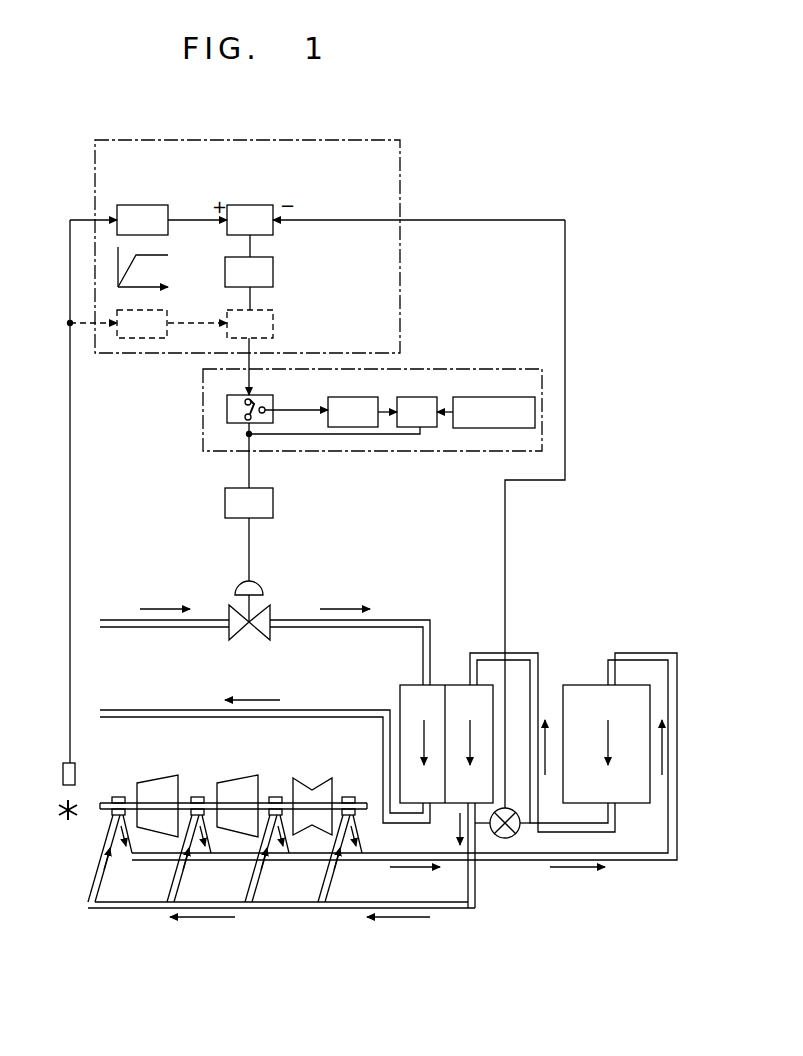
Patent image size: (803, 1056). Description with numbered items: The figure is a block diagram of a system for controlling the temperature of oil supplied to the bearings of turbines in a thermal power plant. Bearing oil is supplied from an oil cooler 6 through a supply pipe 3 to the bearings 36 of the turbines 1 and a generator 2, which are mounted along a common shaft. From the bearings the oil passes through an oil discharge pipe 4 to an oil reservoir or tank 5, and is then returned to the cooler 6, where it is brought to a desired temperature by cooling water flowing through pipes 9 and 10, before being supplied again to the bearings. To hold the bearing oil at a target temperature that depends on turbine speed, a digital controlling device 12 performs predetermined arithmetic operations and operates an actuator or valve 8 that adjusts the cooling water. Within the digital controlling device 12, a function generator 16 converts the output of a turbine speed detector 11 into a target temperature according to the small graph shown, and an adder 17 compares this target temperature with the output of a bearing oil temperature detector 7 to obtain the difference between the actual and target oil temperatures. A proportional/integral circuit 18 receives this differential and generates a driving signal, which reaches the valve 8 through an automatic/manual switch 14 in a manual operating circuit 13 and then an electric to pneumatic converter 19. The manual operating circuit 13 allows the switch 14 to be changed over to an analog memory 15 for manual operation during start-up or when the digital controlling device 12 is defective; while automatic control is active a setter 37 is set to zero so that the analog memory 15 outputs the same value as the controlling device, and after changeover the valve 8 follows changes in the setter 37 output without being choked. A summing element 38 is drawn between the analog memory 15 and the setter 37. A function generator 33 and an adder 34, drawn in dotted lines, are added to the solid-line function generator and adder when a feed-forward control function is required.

The turbines 1 is at (165, 775).
The generator 2 is at (320, 778).
The supply pipe 3 is at (455, 911).
The oil discharge pipe 4 is at (649, 862).
The oil reservoir or tank 5 is at (586, 684).
The oil cooler 6 is at (405, 684).
The bearing oil temperature detector 7 is at (515, 835).
The actuator or valve 8 is at (259, 586).
The cooling water pipe 9 is at (112, 618).
The cooling water pipe 10 is at (122, 708).
The turbine speed detector 11 is at (62, 777).
The digital controlling device 12 is at (355, 141).
The manual operating circuit 13 is at (465, 369).
The automatic/manual switch 14 is at (270, 395).
The analog memory 15 is at (352, 397).
The function generator 16 is at (142, 205).
The adder 17 is at (248, 205).
The proportional/integral circuit 18 is at (273, 271).
The electric to pneumatic converter 19 is at (273, 503).
The function generator 33 is at (167, 318).
The adder 34 is at (273, 320).
The bearings 36 is at (118, 797).
The setter 37 is at (488, 397).
The summing unit 38 is at (412, 397).